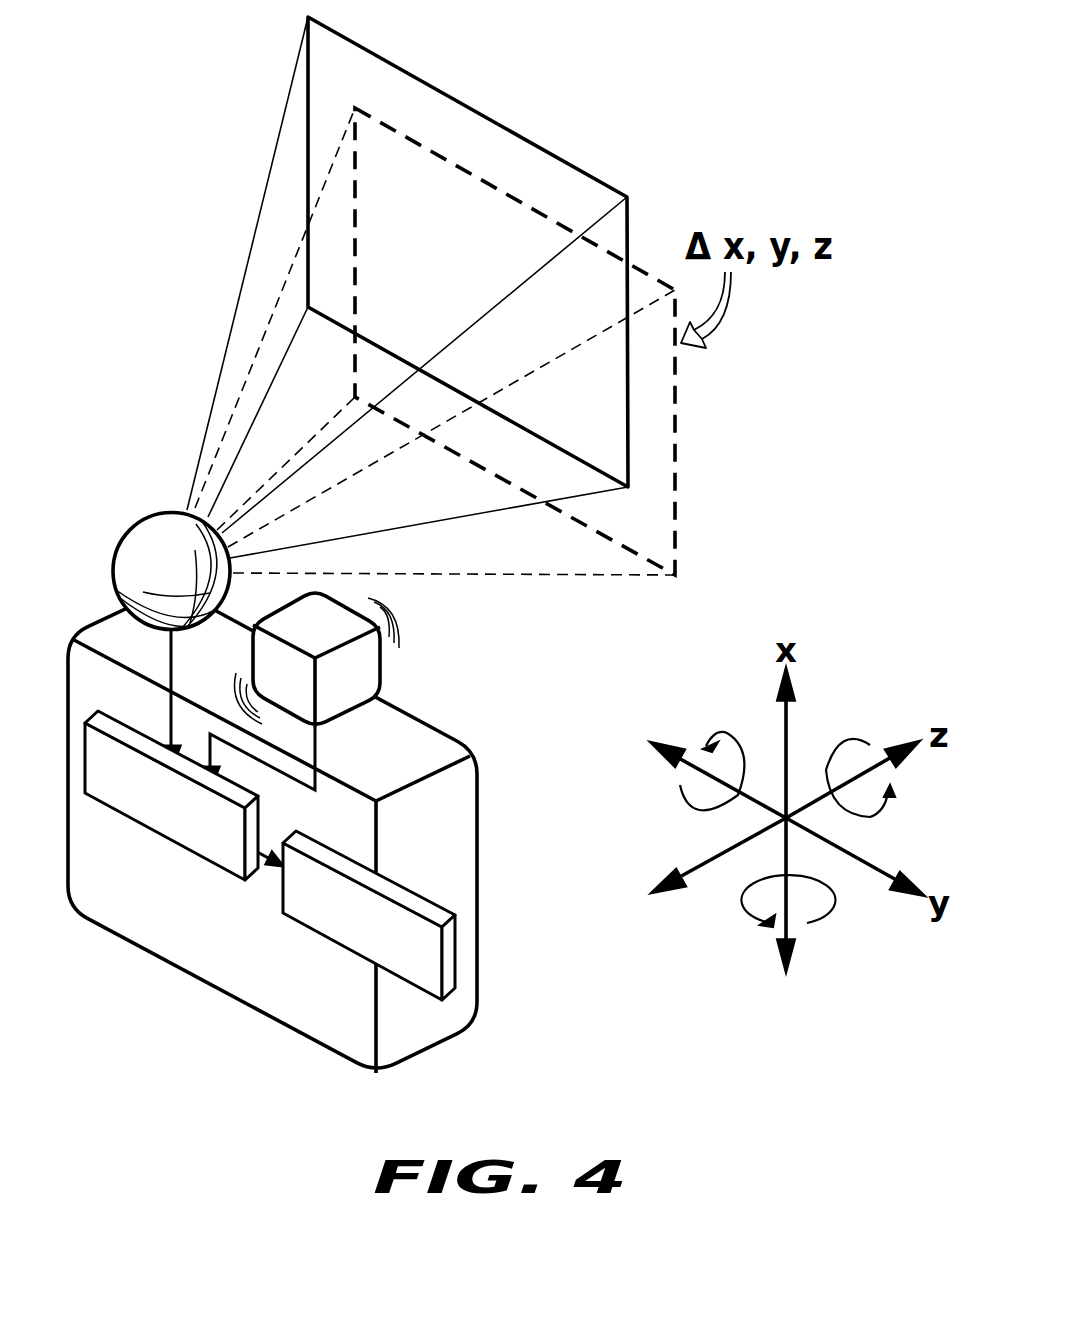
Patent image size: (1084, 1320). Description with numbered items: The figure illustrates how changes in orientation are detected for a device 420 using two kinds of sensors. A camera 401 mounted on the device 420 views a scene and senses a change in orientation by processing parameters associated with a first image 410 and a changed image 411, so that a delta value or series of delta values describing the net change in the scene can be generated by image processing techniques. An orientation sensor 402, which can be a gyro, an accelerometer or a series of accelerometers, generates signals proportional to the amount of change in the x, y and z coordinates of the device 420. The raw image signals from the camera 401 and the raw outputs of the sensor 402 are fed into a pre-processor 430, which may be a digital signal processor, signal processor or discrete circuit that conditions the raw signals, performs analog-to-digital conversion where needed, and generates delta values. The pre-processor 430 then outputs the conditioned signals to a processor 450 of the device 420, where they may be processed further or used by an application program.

The camera 401 is at (140, 521).
The orientation sensor 402 is at (385, 659).
The first image 410 is at (472, 110).
The changed image 411 is at (676, 436).
The device 420 is at (478, 886).
The pre-processor 430 is at (160, 836).
The processor 450 is at (327, 938).